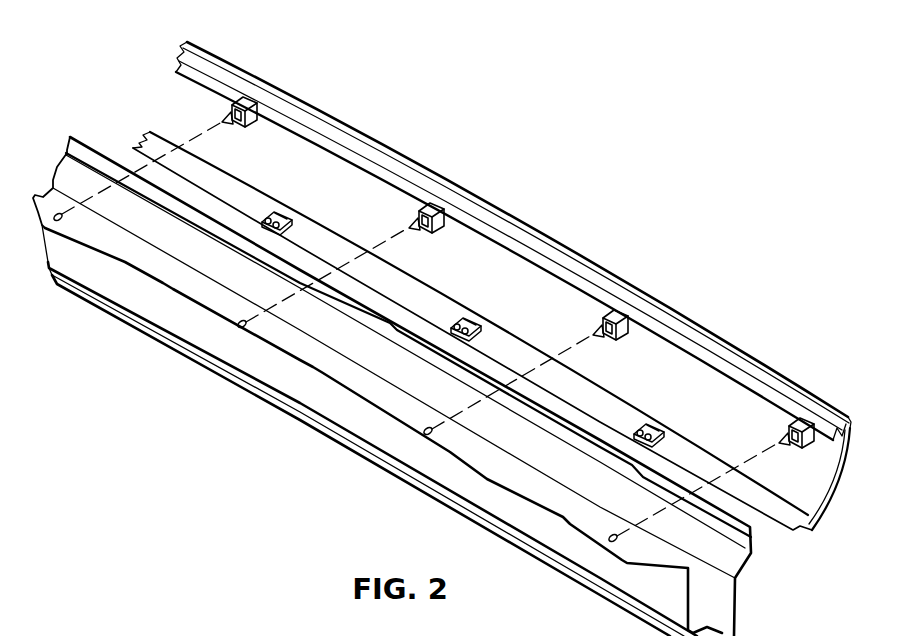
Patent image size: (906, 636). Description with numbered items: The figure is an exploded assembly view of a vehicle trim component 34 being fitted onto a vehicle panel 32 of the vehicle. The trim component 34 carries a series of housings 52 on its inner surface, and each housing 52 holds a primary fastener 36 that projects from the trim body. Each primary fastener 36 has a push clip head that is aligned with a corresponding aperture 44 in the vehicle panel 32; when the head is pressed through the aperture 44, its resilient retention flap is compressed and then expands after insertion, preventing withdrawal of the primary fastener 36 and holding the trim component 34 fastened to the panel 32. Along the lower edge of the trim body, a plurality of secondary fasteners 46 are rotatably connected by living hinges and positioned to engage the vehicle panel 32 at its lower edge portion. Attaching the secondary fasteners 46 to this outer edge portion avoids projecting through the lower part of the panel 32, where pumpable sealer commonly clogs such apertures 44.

The vehicle panel 32 is at (118, 322).
The vehicle trim component 34 is at (740, 351).
The primary fastener 36 is at (226, 118).
The aperture 44 is at (52, 222).
The secondary fastener 46 is at (274, 208).
The housing 52 is at (246, 103).